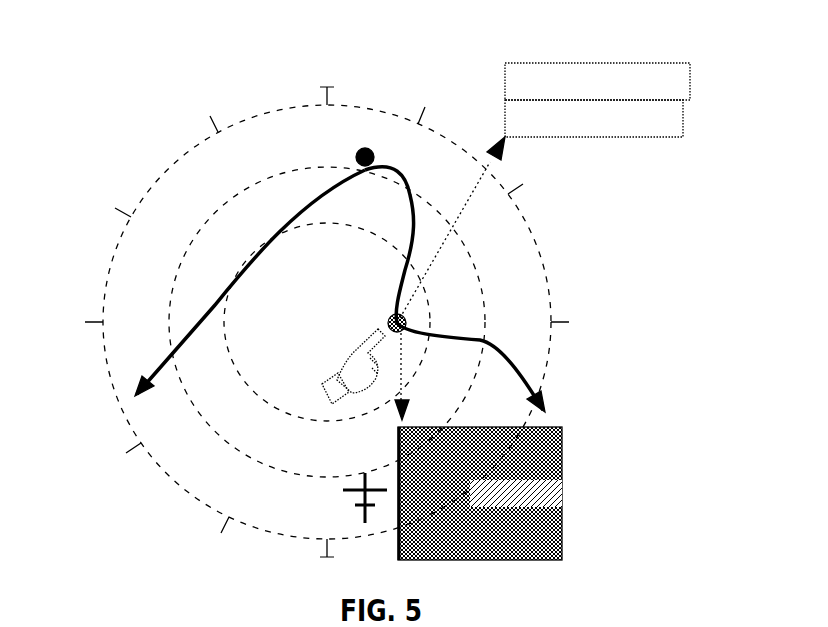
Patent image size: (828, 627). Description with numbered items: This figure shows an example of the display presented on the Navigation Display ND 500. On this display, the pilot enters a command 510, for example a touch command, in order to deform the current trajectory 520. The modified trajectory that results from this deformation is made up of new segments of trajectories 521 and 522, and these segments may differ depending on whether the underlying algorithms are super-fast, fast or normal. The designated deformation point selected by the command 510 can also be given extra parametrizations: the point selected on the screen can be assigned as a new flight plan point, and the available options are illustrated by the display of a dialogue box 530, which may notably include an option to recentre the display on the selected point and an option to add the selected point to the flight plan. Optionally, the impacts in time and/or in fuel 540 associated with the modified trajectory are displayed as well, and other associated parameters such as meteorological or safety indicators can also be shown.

The Navigation Display ND 500 is at (124, 158).
The command 510 is at (333, 341).
The current trajectory 520 is at (360, 283).
The new segment of trajectory 521 is at (417, 224).
The new segment of trajectory 522 is at (497, 343).
The dialogue box 530 is at (566, 490).
The impacts in time and/or in fuel 540 is at (634, 56).